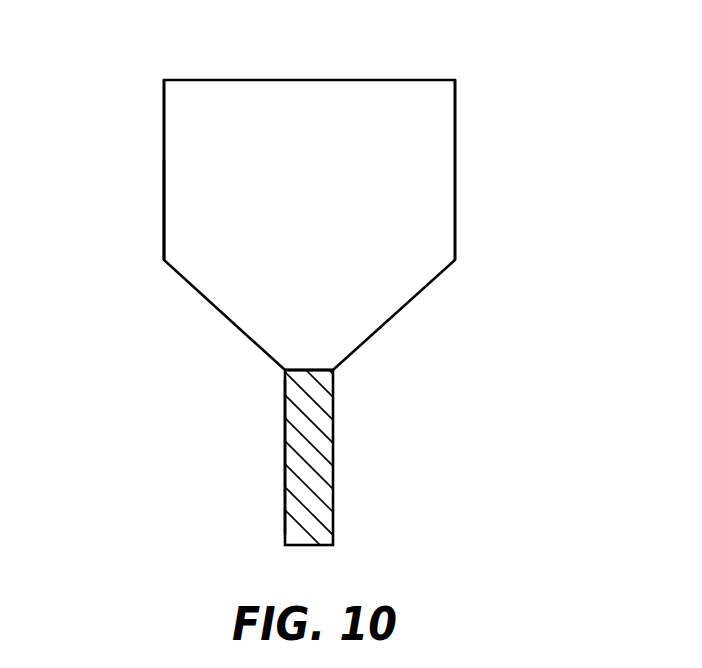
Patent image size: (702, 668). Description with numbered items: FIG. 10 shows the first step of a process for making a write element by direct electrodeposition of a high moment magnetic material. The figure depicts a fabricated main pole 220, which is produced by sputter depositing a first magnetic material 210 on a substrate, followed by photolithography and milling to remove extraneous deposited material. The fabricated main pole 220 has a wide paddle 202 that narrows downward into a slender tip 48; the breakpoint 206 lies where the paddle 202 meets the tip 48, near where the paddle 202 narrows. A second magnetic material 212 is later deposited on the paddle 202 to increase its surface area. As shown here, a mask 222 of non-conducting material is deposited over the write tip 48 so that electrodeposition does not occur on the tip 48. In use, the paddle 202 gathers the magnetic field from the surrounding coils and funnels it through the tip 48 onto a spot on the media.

The fabricated main pole 220 is at (462, 100).
The paddle 202 is at (180, 122).
The first magnetic material 210 is at (180, 217).
The second magnetic material 212 is at (439, 162).
The breakpoint 206 is at (310, 370).
The mask 222 is at (328, 497).
The tip 48 is at (307, 468).